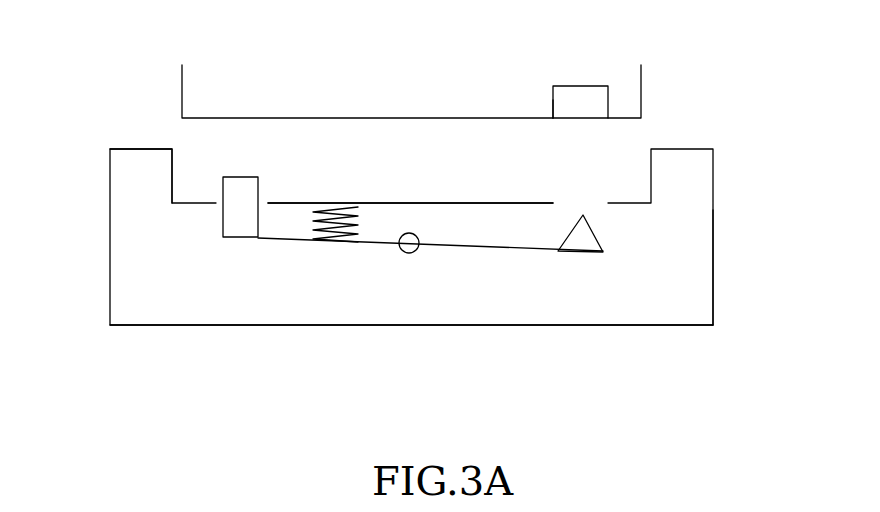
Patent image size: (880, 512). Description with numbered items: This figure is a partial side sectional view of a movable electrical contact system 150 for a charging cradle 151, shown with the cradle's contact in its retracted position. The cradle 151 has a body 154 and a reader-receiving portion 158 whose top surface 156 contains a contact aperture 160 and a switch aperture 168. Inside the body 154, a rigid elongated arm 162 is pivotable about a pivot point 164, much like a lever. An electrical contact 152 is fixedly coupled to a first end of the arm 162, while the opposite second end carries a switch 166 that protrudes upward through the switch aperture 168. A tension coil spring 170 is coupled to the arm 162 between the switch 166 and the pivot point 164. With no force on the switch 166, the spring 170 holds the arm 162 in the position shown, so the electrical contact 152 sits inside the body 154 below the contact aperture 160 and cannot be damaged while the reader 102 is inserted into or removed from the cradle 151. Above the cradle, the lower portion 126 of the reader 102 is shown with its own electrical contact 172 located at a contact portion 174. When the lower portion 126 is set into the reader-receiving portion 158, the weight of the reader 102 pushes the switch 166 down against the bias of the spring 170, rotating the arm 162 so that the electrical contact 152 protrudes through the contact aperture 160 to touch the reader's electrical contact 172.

The reader 102 is at (152, 48).
The lower portion of the reader 126 is at (457, 117).
The movable electrical contact system 150 is at (586, 300).
The charging cradle 151 is at (727, 202).
The electrical contact 152 is at (597, 238).
The body 154 is at (215, 325).
The top surface 156 is at (412, 203).
The reader-receiving portion 158 is at (180, 145).
The contact aperture 160 is at (609, 185).
The elongated arm 162 is at (488, 253).
The pivot point 164 is at (407, 252).
The switch 166 is at (238, 210).
The switch aperture 168 is at (270, 193).
The tension coil spring 170 is at (313, 225).
The electrical contact of the reader 172 is at (570, 117).
The contact portion 174 is at (582, 85).